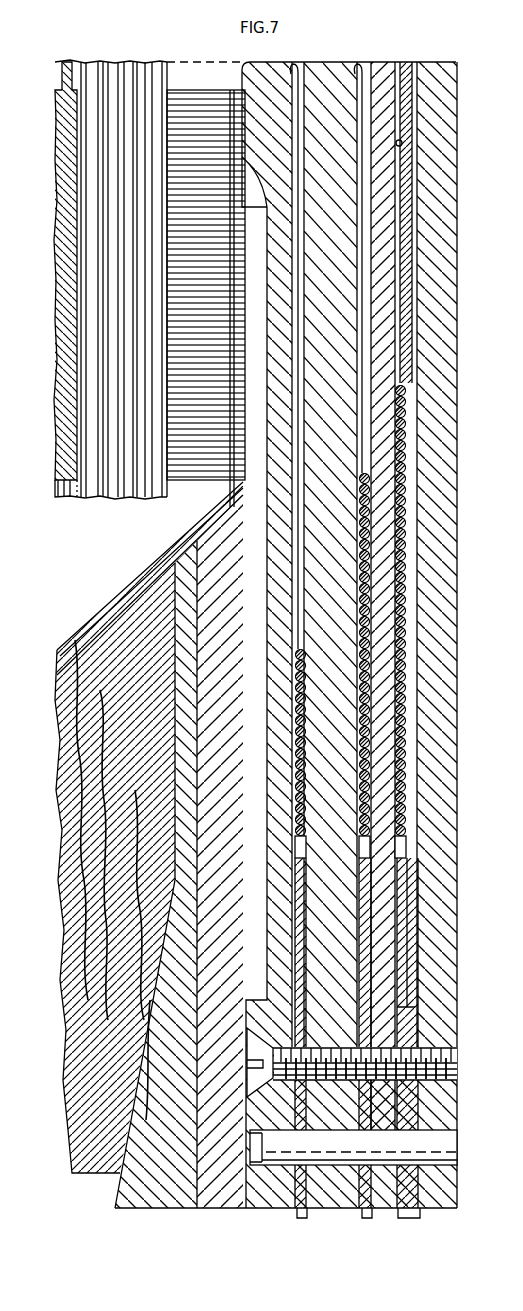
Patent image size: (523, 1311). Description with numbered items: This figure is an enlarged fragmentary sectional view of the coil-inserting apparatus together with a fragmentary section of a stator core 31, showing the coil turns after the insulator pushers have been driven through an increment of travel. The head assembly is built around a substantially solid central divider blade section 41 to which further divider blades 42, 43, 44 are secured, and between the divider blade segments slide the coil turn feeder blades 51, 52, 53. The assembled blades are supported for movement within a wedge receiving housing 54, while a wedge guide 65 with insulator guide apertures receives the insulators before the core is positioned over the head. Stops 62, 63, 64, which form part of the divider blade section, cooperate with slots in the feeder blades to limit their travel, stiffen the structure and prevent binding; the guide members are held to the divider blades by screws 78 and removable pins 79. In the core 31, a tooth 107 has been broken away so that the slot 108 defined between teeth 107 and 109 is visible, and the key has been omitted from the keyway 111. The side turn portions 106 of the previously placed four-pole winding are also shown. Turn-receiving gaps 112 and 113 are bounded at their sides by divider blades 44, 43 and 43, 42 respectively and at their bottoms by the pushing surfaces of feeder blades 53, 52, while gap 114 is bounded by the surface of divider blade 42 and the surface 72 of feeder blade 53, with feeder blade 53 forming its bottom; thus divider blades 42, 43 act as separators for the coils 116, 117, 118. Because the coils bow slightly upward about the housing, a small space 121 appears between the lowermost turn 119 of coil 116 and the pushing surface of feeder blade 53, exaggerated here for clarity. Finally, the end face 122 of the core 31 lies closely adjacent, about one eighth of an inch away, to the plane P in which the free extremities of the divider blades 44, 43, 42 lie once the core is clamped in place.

The stator core 31 is at (63, 90).
The central divider blade section 41 is at (440, 100).
The divider blade 42 is at (380, 60).
The divider blade 43 is at (335, 60).
The divider blade 44 is at (258, 62).
The coil turn feeder blade 51 is at (408, 930).
The coil turn feeder blade 52 is at (363, 934).
The coil turn feeder blade 53 is at (300, 901).
The wedge receiving housing 54 is at (155, 1210).
The stop 62 is at (303, 1219).
The stop 63 is at (368, 1219).
The stop 64 is at (412, 1219).
The wedge guide 65 is at (223, 1210).
The surface of feeder blade 72 is at (408, 62).
The screw 78 is at (438, 1054).
The removable pin 79 is at (398, 1149).
The side turn portion 106 is at (99, 498).
The tooth 107 is at (75, 170).
The slot 108 is at (208, 253).
The tooth 109 is at (183, 90).
The keyway 111 is at (212, 204).
The turn-receiving gap 112 is at (296, 63).
The turn-receiving gap 113 is at (362, 62).
The turn-receiving gap 114 is at (403, 60).
The coil 116 is at (165, 879).
The coil 117 is at (150, 717).
The coil 118 is at (80, 774).
The lowermost turn 119 is at (306, 829).
The space 121 is at (307, 846).
The end face 122 is at (210, 90).
The plane P is at (207, 63).